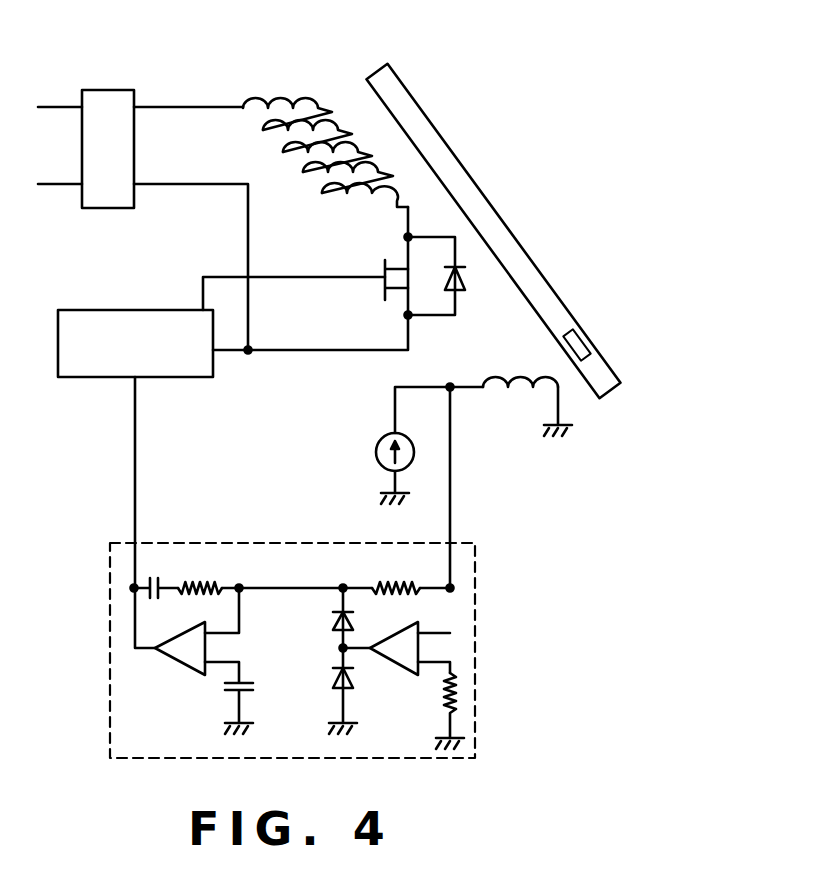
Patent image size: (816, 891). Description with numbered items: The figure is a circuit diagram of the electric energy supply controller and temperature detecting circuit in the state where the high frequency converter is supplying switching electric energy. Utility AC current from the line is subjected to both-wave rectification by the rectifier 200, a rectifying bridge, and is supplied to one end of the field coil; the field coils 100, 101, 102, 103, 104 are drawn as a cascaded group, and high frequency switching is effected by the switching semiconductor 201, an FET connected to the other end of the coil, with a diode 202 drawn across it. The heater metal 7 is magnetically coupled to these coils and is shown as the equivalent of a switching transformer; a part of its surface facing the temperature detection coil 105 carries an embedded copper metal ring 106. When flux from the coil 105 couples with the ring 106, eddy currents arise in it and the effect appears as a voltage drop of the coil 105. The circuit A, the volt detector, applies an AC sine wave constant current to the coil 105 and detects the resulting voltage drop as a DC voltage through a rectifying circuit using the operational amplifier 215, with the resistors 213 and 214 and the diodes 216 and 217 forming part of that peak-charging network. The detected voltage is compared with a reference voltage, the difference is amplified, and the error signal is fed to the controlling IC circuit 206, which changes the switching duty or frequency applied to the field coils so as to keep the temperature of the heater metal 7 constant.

The heater metal 7 is at (413, 95).
The field coil 100 is at (283, 100).
The field coil 101 is at (343, 118).
The field coil 102 is at (275, 143).
The field coil 103 is at (308, 173).
The field coil 104 is at (355, 190).
The temperature detection coil 105 is at (520, 390).
The metal ring 106 is at (592, 338).
The rectifier 200 is at (110, 90).
The switching semiconductor 201 is at (380, 282).
The diode 202 is at (467, 273).
The controlling IC circuit 206 is at (133, 310).
The resistor 213 is at (393, 582).
The resistor 214 is at (456, 693).
The operational amplifier 215 is at (395, 667).
The diode 216 is at (333, 622).
The diode 217 is at (333, 678).
The circuit for detecting the voltage A is at (477, 580).